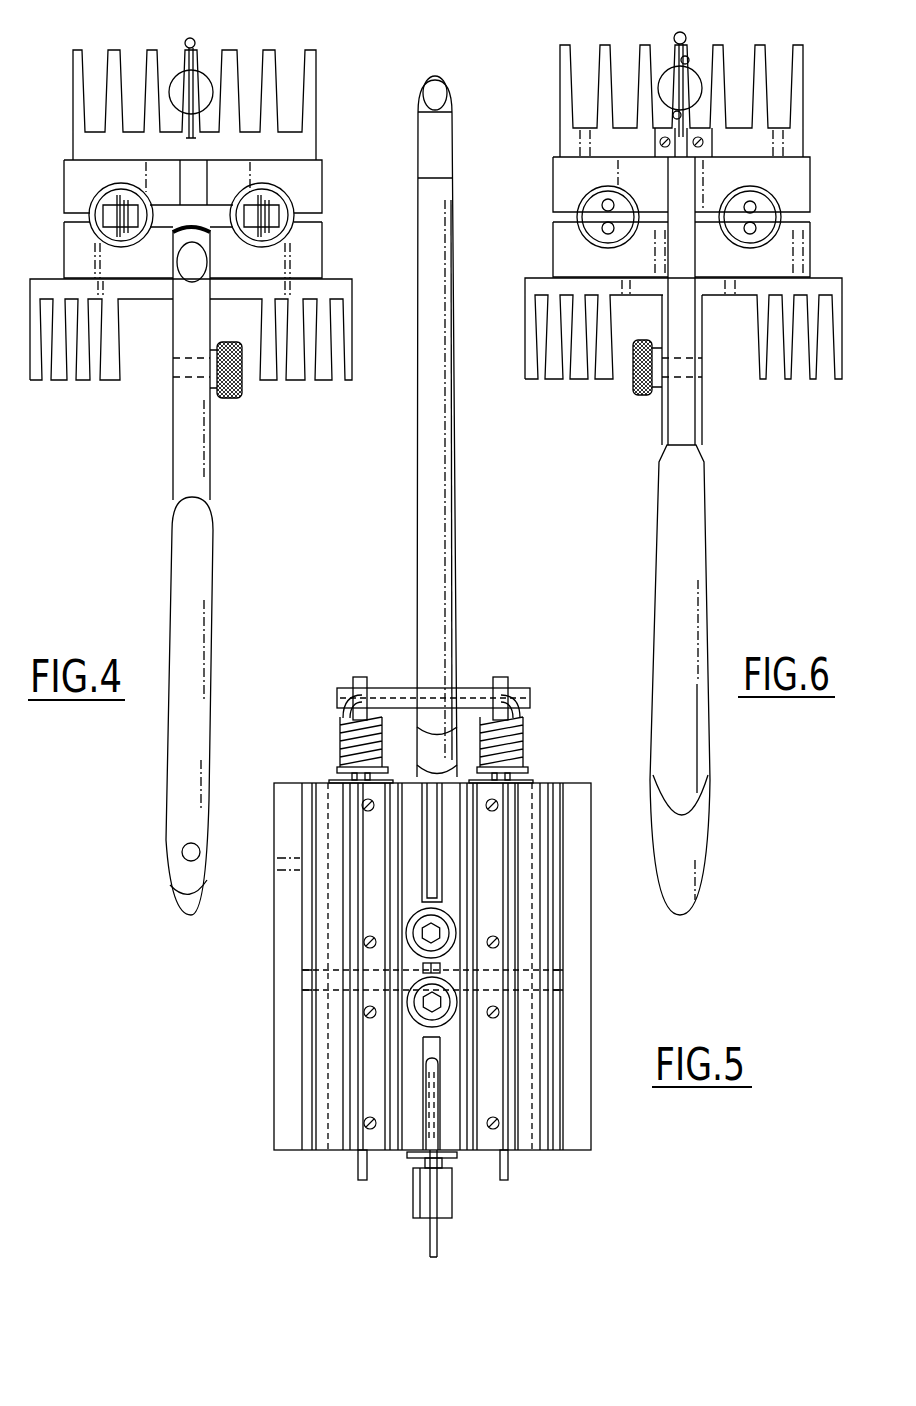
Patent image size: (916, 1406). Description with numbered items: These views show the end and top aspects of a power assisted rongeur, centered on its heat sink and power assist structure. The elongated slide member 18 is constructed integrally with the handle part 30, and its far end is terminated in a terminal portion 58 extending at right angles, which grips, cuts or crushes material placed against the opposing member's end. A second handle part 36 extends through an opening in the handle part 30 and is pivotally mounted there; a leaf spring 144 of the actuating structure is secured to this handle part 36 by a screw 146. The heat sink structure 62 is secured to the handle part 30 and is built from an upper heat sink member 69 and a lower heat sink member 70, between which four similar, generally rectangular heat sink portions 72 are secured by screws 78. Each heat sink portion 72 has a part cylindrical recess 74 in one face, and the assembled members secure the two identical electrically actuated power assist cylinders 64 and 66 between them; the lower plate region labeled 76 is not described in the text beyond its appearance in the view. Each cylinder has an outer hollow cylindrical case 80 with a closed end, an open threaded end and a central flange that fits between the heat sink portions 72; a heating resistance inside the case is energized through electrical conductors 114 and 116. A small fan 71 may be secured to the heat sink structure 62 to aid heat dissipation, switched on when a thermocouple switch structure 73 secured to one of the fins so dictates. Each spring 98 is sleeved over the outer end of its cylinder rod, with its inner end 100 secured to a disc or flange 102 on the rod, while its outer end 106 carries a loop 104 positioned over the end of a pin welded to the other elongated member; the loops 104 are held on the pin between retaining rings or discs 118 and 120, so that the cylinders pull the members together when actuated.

In FIG. 4, the elongated slide member 18 is at (180, 283).
In FIG. 6, the handle part 30 is at (698, 541).
In FIG. 4, the second handle part 36 is at (182, 446).
In FIG. 6, the second handle part 36 is at (709, 808).
In FIG. 4, the terminal portion 58 is at (210, 240).
In FIG. 4, the heat sink structure 62 is at (316, 143).
In FIG. 5, the heat sink structure 62 is at (303, 927).
In FIG. 6, the heat sink structure 62 is at (805, 147).
In FIG. 4, the power assist cylinder 64 is at (322, 228).
In FIG. 6, the power assist cylinder 64 is at (577, 230).
In FIG. 4, the power assist cylinder 66 is at (92, 236).
In FIG. 6, the power assist cylinder 66 is at (780, 240).
In FIG. 4, the upper heat sink member 69 is at (316, 58).
In FIG. 5, the upper heat sink member 69 is at (310, 1092).
In FIG. 6, the upper heat sink member 69 is at (560, 58).
In FIG. 4, the lower heat sink member 70 is at (30, 362).
In FIG. 5, the lower heat sink member 70 is at (282, 1042).
In FIG. 6, the lower heat sink member 70 is at (845, 368).
In FIG. 4, the fan 71 is at (176, 70).
In FIG. 5, the fan 71 is at (442, 1218).
In FIG. 6, the fan 71 is at (663, 67).
In FIG. 4, the heat sink portions 72 is at (64, 175).
In FIG. 5, the heat sink portions 72 is at (562, 1012).
In FIG. 4, the thermocouple switch structure 73 is at (195, 40).
In FIG. 5, the thermocouple switch structure 73 is at (423, 1127).
In FIG. 6, the thermocouple switch structure 73 is at (686, 40).
In FIG. 4, the part cylindrical recess 74 is at (290, 197).
In FIG. 4, the lower plate 76 is at (325, 264).
In FIG. 5, the screws 78 is at (495, 810).
In FIG. 6, the outer hollow cylindrical case 80 is at (703, 419).
In FIG. 5, the spring 98 is at (520, 752).
In FIG. 5, the end of spring 100 is at (340, 763).
In FIG. 5, the disc or flange 102 is at (527, 766).
In FIG. 5, the loop 104 is at (503, 690).
In FIG. 5, the end of spring 106 is at (340, 722).
In FIG. 6, the electrical conductor 114 is at (603, 203).
In FIG. 6, the electrical conductor 116 is at (603, 230).
In FIG. 5, the retaining ring or disc 118 is at (492, 680).
In FIG. 5, the retaining ring or disc 120 is at (517, 692).
In FIG. 4, the leaf spring 144 is at (204, 576).
In FIG. 4, the screw 146 is at (181, 852).